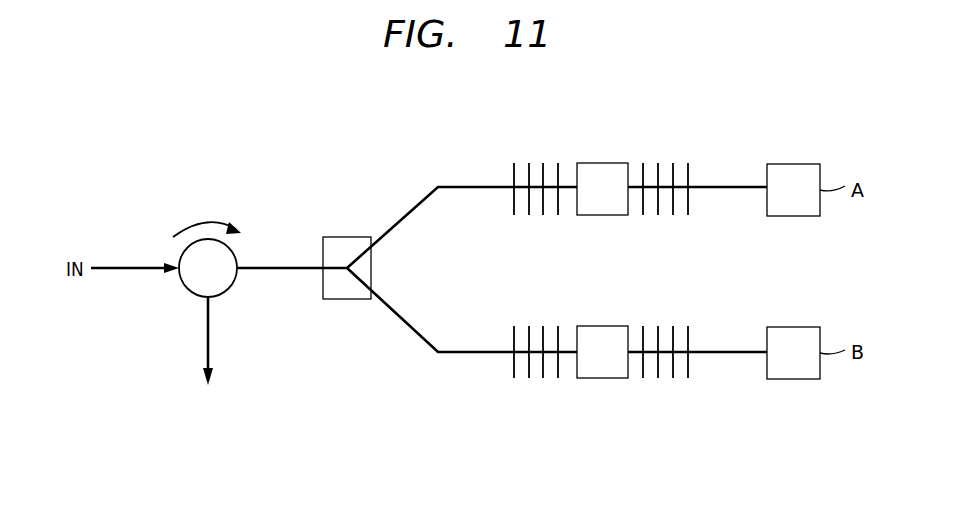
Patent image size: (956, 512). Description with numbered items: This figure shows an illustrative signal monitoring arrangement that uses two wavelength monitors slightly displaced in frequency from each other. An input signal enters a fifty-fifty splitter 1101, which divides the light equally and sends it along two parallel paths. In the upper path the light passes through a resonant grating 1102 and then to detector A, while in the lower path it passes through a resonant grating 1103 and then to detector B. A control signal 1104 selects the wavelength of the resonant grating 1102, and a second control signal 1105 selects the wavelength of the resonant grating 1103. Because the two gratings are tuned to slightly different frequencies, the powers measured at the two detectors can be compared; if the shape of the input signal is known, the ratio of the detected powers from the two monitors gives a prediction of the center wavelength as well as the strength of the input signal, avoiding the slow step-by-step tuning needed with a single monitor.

The 50/50 splitter 1101 is at (347, 237).
The resonant grating 1102 is at (693, 228).
The resonant grating 1103 is at (693, 392).
The control signal 1104 is at (603, 163).
The control signal 1105 is at (603, 326).